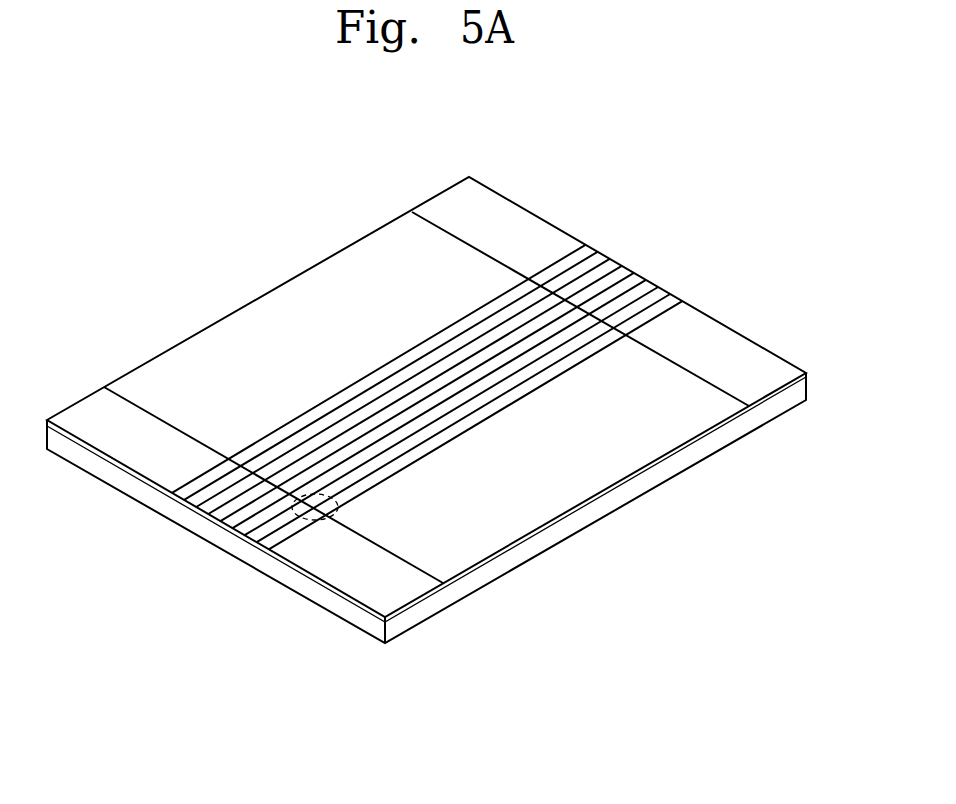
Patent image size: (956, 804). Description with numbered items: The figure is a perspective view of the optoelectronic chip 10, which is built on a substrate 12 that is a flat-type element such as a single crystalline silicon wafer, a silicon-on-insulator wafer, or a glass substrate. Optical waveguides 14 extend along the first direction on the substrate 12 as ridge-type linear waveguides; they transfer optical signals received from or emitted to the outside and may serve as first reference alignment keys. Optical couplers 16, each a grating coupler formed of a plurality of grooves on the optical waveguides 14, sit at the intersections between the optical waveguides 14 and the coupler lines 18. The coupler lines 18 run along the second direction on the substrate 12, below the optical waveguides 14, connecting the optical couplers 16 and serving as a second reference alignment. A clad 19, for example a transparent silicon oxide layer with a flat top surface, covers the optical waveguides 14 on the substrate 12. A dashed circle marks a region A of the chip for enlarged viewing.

The optoelectronic chip 10 is at (297, 137).
The substrate 12 is at (426, 508).
The optical waveguides 14 is at (387, 485).
The optical couplers 16 is at (532, 282).
The coupler lines 18 is at (644, 333).
The clad 19 is at (462, 495).
The detail region A is at (310, 576).